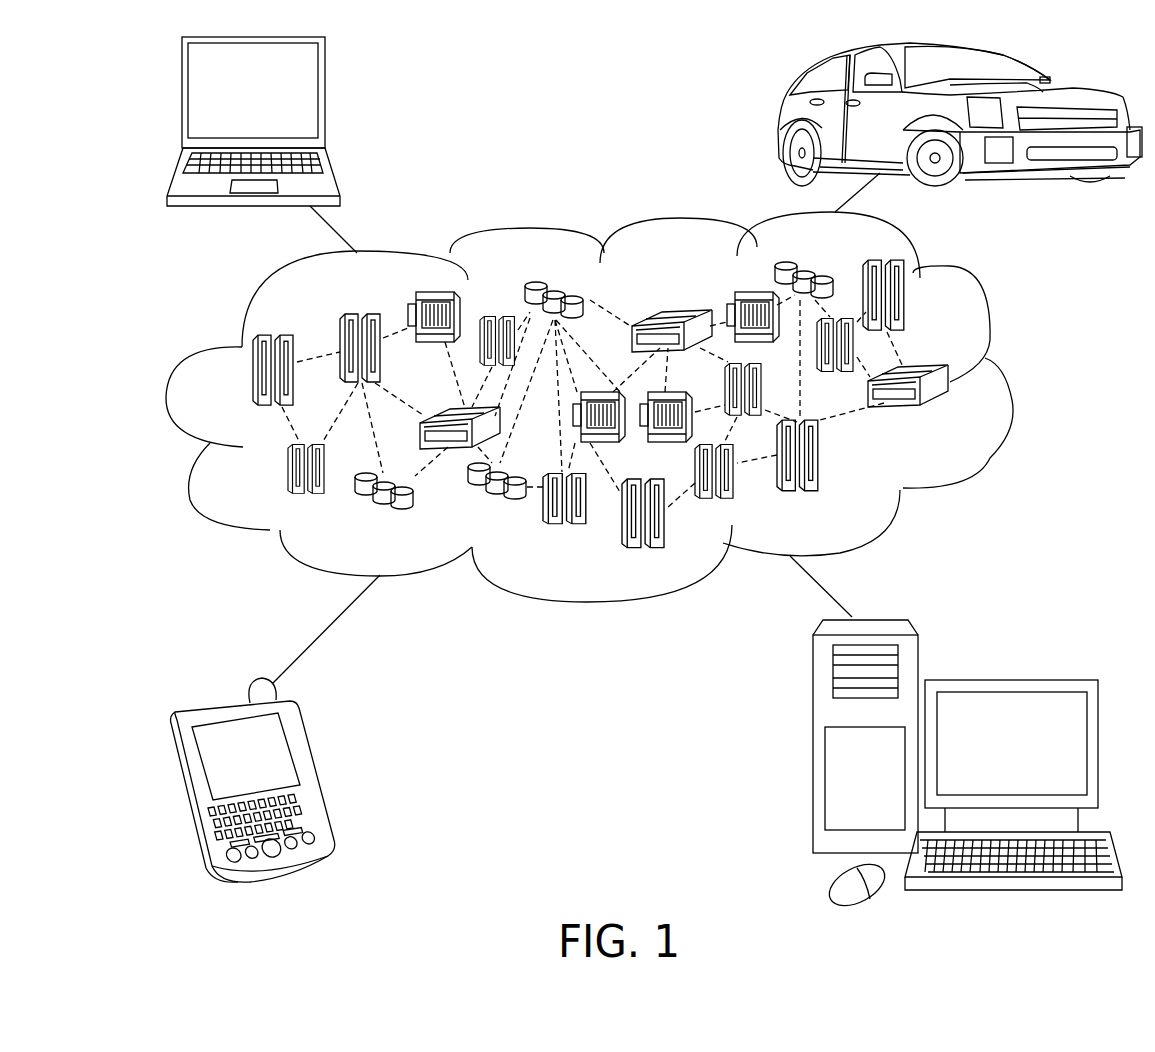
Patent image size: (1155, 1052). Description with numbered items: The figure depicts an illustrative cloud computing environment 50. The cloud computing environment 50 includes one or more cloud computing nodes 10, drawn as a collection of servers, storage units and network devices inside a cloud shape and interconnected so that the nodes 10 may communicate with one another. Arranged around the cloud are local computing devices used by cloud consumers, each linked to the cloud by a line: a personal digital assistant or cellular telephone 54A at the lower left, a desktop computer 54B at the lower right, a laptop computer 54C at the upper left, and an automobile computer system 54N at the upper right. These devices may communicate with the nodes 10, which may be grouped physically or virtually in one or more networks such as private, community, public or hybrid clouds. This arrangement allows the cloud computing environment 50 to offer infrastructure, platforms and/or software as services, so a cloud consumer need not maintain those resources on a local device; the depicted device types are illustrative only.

The cloud computing nodes 10 is at (952, 415).
The cloud computing environment 50 is at (1010, 382).
The personal digital assistant (PDA) or cellular telephone 54A is at (312, 775).
The desktop computer 54B is at (1008, 680).
The laptop computer 54C is at (325, 99).
The automobile computer system 54N is at (783, 120).